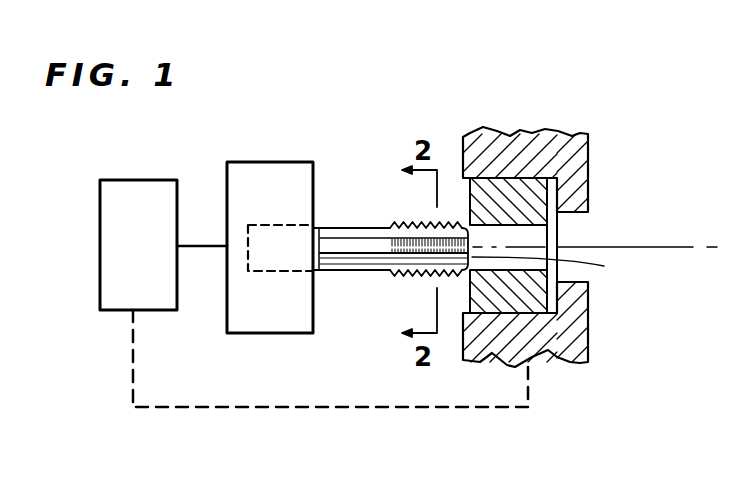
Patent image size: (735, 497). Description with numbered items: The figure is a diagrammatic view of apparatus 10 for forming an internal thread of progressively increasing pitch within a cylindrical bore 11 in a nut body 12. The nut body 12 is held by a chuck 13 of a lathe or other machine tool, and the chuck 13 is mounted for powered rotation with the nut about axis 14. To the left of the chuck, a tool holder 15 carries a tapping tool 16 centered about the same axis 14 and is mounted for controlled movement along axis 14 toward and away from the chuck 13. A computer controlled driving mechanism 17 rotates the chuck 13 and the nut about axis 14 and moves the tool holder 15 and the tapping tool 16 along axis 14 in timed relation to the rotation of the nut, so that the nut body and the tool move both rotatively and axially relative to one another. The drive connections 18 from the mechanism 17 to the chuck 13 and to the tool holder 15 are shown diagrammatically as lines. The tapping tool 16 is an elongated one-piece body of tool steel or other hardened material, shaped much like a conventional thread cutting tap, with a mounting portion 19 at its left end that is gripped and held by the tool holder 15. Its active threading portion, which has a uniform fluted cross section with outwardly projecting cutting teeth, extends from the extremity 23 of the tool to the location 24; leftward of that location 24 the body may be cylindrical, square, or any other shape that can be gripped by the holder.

The apparatus 10 is at (383, 132).
The cylindrical bore 11 is at (520, 226).
The nut body 12 is at (503, 196).
The chuck 13 is at (570, 333).
The axis 14 is at (667, 247).
The tool holder 15 is at (272, 165).
The tapping tool 16 is at (383, 278).
The computer controlled driving mechanism 17 is at (143, 192).
The drive connections 18 is at (213, 249).
The mounting portion 19 is at (264, 226).
The extremity 23 is at (557, 272).
The location 24 is at (330, 226).